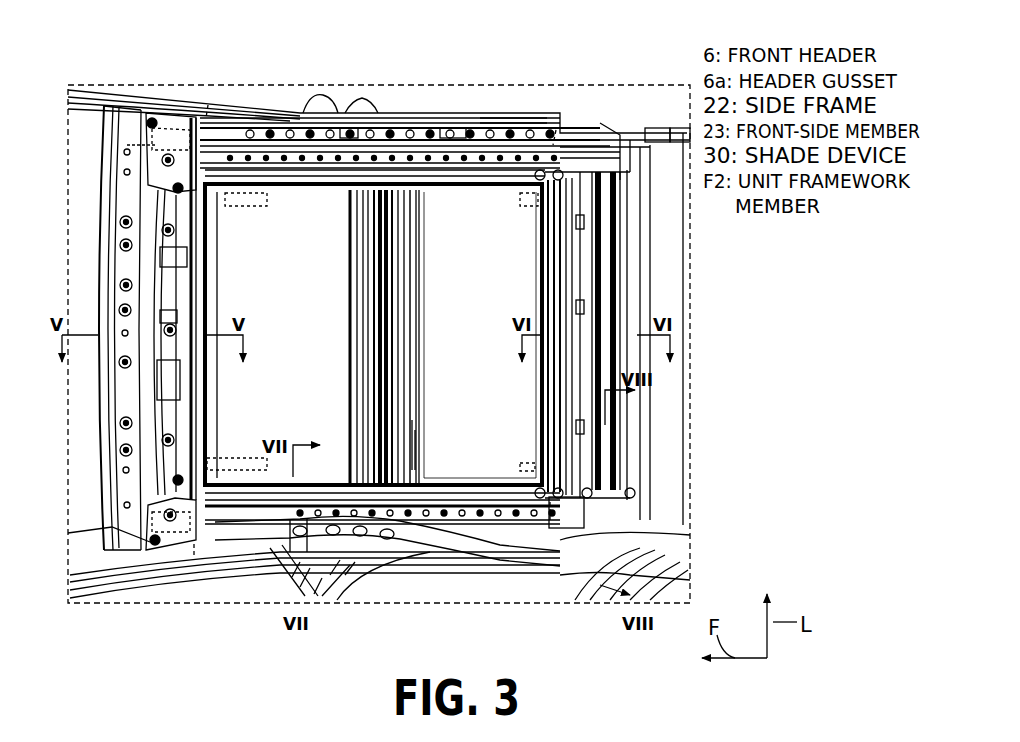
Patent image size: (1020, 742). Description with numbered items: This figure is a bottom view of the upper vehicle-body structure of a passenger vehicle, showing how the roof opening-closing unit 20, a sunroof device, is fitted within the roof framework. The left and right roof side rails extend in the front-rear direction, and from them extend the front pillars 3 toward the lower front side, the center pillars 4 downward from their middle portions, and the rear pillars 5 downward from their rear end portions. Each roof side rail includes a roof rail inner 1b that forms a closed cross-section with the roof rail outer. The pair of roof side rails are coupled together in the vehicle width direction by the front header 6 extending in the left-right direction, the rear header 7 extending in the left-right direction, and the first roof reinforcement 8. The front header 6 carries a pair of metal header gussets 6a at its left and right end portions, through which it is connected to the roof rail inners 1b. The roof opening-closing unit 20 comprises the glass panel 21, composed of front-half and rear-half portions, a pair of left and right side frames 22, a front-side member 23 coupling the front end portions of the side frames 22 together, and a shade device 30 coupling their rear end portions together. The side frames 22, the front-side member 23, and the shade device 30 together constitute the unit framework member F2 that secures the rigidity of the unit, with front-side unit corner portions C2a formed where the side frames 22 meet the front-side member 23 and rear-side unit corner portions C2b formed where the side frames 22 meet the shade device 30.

The roof rail inner 1b is at (470, 125).
The front pillar 3 is at (93, 596).
The center pillar 4 is at (342, 590).
The rear pillar 5 is at (665, 585).
The front header 6 is at (98, 240).
The header gusset 6a is at (133, 146).
The rear header 7 is at (690, 262).
The first roof reinforcement 8 is at (352, 390).
The roof opening-closing unit 20 is at (224, 250).
The glass panel 21 is at (478, 351).
The side frame 22 is at (448, 175).
The front-side member 23 is at (205, 290).
The shade device 30 is at (538, 408).
The unit framework member F2 is at (310, 153).
The front-side unit corner portion C2a is at (208, 105).
The rear-side unit corner portion C2b is at (556, 130).